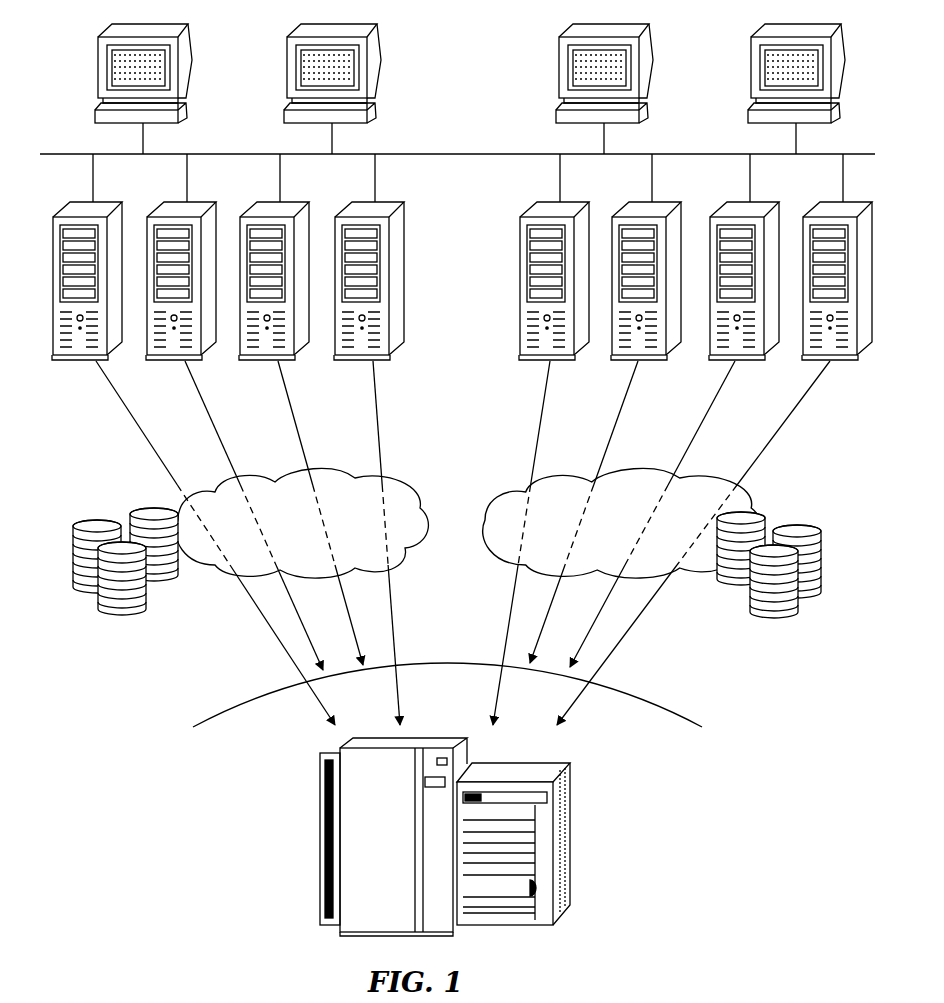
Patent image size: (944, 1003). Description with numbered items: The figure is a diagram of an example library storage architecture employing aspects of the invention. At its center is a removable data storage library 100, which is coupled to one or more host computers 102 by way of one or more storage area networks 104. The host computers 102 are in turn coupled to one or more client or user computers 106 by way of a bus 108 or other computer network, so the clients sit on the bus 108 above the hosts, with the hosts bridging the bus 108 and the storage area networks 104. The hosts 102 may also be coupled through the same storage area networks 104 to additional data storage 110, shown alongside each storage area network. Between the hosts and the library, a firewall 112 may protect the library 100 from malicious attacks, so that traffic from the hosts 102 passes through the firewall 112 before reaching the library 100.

The removable data storage library 100 is at (572, 865).
The host computers 102 is at (125, 212).
The storage area networks 104 is at (213, 573).
The client computers 106 is at (192, 60).
The bus 108 is at (438, 153).
The additional data storage 110 is at (123, 620).
The firewall 112 is at (690, 708).